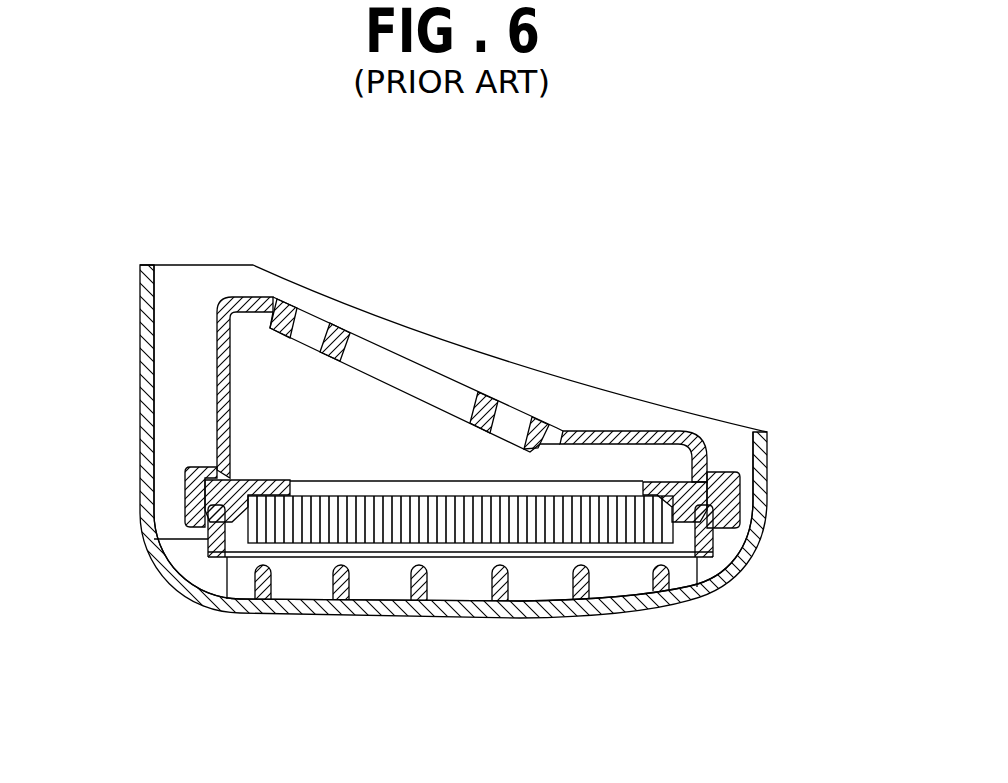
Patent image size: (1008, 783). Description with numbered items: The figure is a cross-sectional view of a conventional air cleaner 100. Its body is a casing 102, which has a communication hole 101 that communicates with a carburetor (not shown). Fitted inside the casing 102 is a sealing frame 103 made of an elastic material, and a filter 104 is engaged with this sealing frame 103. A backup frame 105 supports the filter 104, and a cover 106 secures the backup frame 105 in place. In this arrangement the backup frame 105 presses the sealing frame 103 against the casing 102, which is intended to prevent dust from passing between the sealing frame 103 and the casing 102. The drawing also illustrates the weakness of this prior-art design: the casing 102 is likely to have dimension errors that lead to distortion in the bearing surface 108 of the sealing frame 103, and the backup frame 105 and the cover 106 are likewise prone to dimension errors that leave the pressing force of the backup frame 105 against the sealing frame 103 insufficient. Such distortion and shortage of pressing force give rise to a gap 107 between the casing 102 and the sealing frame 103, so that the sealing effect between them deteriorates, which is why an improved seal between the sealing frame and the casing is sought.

The conventional air cleaner 100 is at (637, 620).
The communication hole 101 is at (366, 340).
The casing 102 is at (253, 297).
The sealing frame 103 is at (672, 492).
The filter 104 is at (577, 497).
The backup frame 105 is at (730, 578).
The cover 106 is at (700, 597).
The gap 107 is at (215, 462).
The bearing surface 108 is at (205, 497).